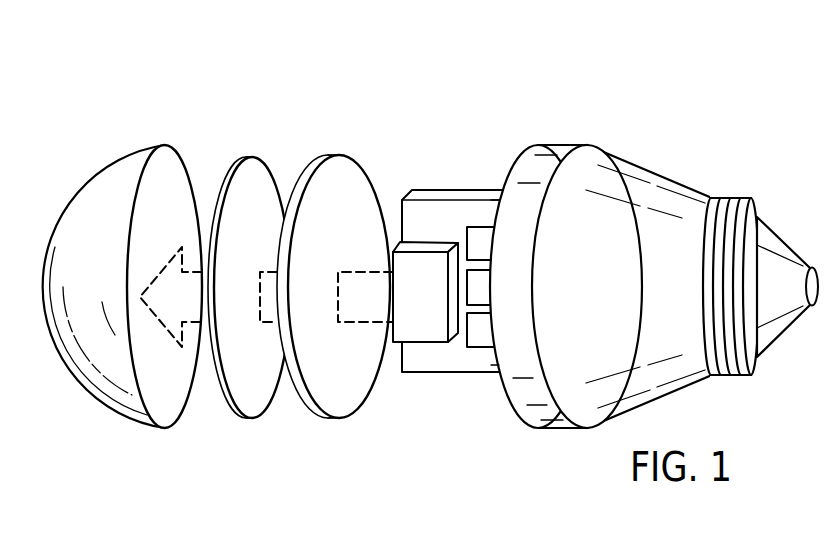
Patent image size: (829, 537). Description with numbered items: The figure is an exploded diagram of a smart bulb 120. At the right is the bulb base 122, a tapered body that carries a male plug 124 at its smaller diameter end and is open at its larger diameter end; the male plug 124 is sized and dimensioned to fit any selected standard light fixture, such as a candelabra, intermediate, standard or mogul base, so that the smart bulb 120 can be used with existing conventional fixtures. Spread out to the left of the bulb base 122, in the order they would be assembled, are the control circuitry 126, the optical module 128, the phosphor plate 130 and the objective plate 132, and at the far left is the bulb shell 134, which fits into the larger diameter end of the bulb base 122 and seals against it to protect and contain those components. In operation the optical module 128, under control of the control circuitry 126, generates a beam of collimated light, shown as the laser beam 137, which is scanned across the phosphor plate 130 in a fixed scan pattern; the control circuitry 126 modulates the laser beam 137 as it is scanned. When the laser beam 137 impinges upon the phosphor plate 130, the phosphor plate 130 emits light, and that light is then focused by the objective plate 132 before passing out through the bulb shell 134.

The smart bulb 120 is at (430, 223).
The bulb base 122 is at (652, 172).
The male plug 124 is at (757, 208).
The control circuitry 126 is at (477, 212).
The optical module 128 is at (420, 343).
The phosphor plate 130 is at (346, 177).
The objective plate 132 is at (266, 177).
The bulb shell 134 is at (119, 170).
The laser beam 137 is at (363, 323).